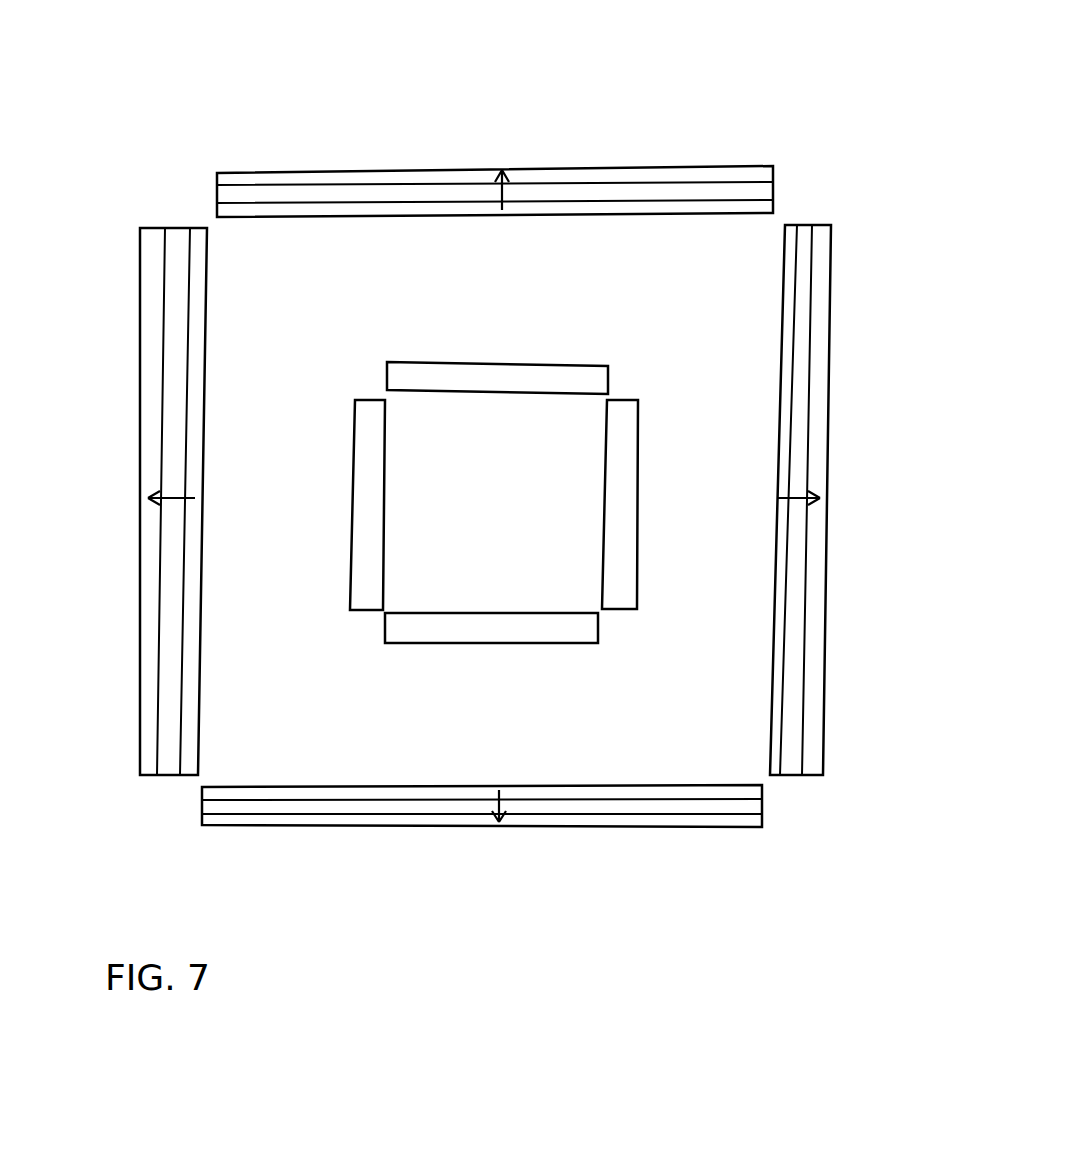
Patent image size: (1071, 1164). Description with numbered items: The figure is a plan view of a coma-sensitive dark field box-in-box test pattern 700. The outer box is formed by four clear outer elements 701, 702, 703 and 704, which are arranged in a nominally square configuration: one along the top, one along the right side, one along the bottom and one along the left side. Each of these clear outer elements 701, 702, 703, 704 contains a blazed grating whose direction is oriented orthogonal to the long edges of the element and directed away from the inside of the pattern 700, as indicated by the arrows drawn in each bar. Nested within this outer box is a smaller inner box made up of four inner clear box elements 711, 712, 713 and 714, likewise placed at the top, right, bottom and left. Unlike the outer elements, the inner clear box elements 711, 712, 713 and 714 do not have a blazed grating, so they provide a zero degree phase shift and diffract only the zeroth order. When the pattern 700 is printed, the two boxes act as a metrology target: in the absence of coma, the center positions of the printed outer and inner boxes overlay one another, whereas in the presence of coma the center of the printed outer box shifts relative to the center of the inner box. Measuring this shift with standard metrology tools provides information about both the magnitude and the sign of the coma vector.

The dark field box-in-box test pattern 700 is at (717, 80).
The clear outer element 701 is at (253, 188).
The clear outer element 702 is at (802, 310).
The clear outer element 703 is at (650, 807).
The clear outer element 704 is at (175, 299).
The inner clear box element 711 is at (490, 373).
The inner clear box element 712 is at (623, 499).
The inner clear box element 713 is at (498, 632).
The inner clear box element 714 is at (368, 537).